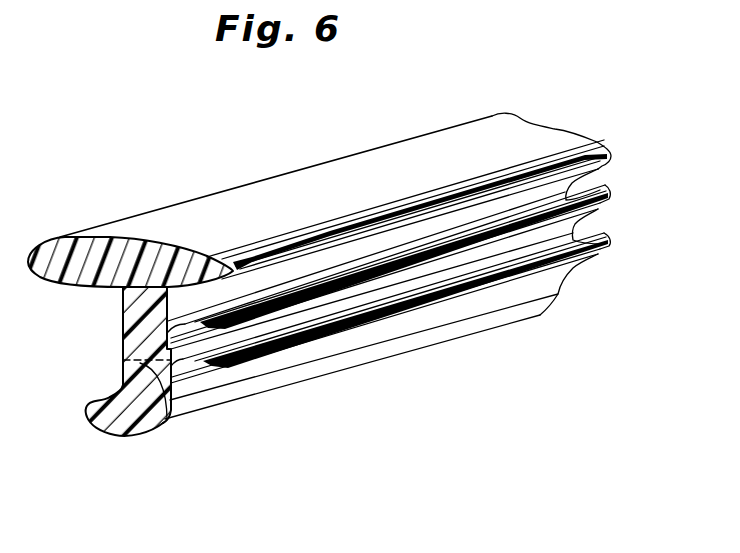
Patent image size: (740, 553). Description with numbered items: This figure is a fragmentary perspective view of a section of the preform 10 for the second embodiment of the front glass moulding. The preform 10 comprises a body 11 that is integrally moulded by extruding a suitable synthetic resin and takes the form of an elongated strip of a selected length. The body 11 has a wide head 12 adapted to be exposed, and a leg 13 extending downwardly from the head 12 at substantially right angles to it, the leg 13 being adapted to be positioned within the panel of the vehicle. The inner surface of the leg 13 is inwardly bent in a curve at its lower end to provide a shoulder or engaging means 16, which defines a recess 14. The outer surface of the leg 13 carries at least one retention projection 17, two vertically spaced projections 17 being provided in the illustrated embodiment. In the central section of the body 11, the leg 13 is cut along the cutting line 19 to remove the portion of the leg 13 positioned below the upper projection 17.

The preform 10 is at (345, 156).
The body 11 is at (468, 118).
The head 12 is at (138, 245).
The leg 13 is at (122, 298).
The recess 14 is at (108, 335).
The shoulder or engaging means 16 is at (87, 422).
The retention projection 17 is at (300, 352).
The cutting line 19 is at (166, 422).